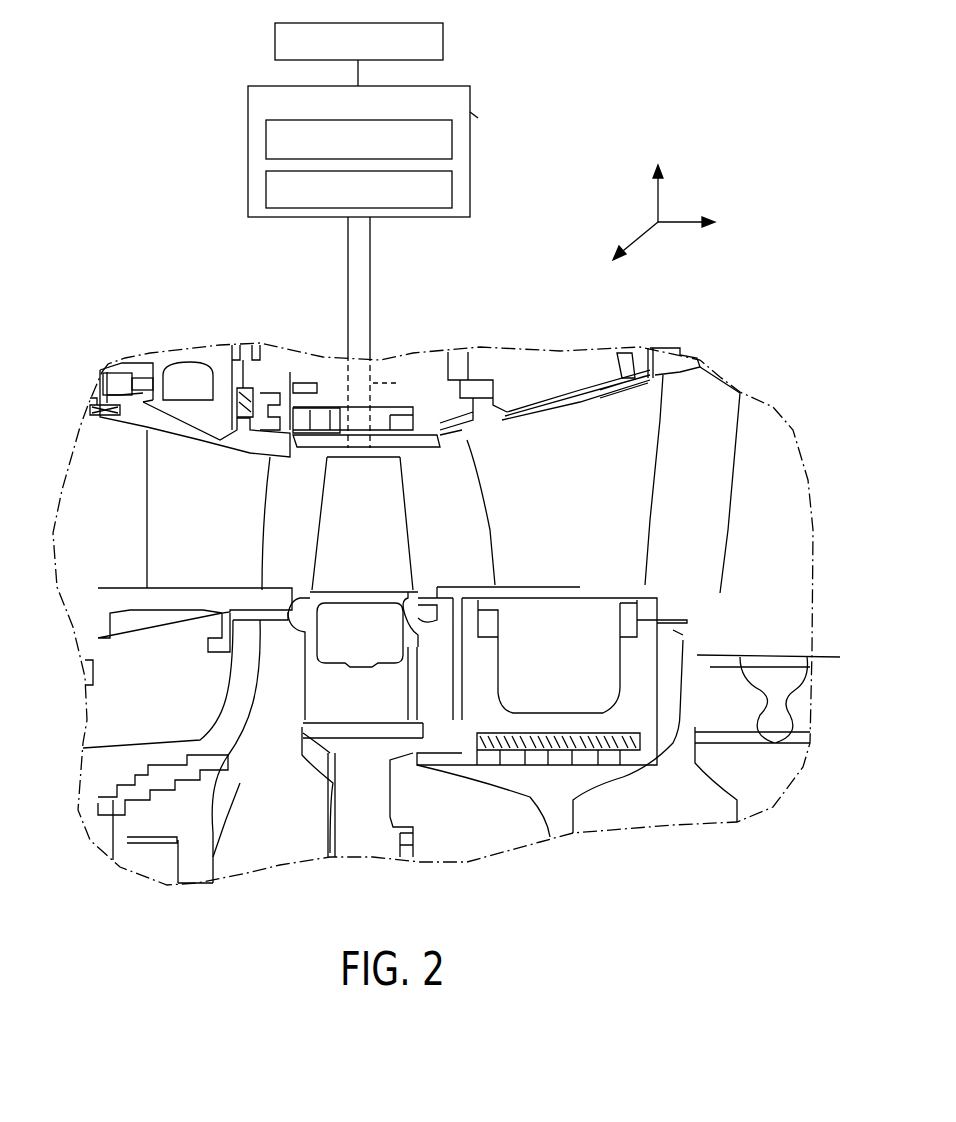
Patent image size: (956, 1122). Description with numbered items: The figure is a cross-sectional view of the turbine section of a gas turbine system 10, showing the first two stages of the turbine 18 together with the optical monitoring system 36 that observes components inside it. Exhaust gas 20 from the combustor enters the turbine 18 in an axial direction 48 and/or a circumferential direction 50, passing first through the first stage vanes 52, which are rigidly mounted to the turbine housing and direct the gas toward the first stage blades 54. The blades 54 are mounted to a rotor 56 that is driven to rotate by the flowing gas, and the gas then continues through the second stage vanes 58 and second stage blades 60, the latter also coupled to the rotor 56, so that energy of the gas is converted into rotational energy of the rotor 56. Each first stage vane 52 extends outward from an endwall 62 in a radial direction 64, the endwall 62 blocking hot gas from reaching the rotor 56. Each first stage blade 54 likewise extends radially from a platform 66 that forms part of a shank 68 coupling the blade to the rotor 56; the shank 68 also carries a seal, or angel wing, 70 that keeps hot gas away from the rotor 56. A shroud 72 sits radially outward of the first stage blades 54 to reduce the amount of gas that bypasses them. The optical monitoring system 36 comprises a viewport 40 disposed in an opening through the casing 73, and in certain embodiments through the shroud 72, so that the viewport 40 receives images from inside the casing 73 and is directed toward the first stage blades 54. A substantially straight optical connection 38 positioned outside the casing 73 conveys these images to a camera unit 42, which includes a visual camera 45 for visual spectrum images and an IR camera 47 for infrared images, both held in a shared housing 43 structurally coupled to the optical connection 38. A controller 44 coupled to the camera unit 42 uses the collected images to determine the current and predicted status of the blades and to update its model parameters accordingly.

The gas turbine system 10 is at (118, 200).
The turbine 18 is at (543, 380).
The exhaust gas 20 is at (122, 512).
The optical monitoring system 36 is at (564, 143).
The optical connection 38 is at (348, 256).
The viewport 40 is at (402, 390).
The camera unit 42 is at (248, 104).
The shared housing 43 is at (470, 112).
The controller 44 is at (275, 42).
The visual camera 45 is at (266, 135).
The IR camera 47 is at (266, 182).
The axial direction 48 is at (680, 222).
The circumferential direction 50 is at (640, 238).
The first stage vanes 52 is at (214, 509).
The first stage blades 54 is at (379, 532).
The rotor 56 is at (371, 707).
The second stage vanes 58 is at (576, 502).
The second stage blades 60 is at (781, 499).
The endwall 62 is at (278, 600).
The radial direction 64 is at (658, 200).
The platform 66 is at (382, 590).
The shank 68 is at (310, 628).
The seal (angel wing) 70 is at (425, 625).
The shroud 72 is at (318, 445).
The casing 73 is at (333, 388).